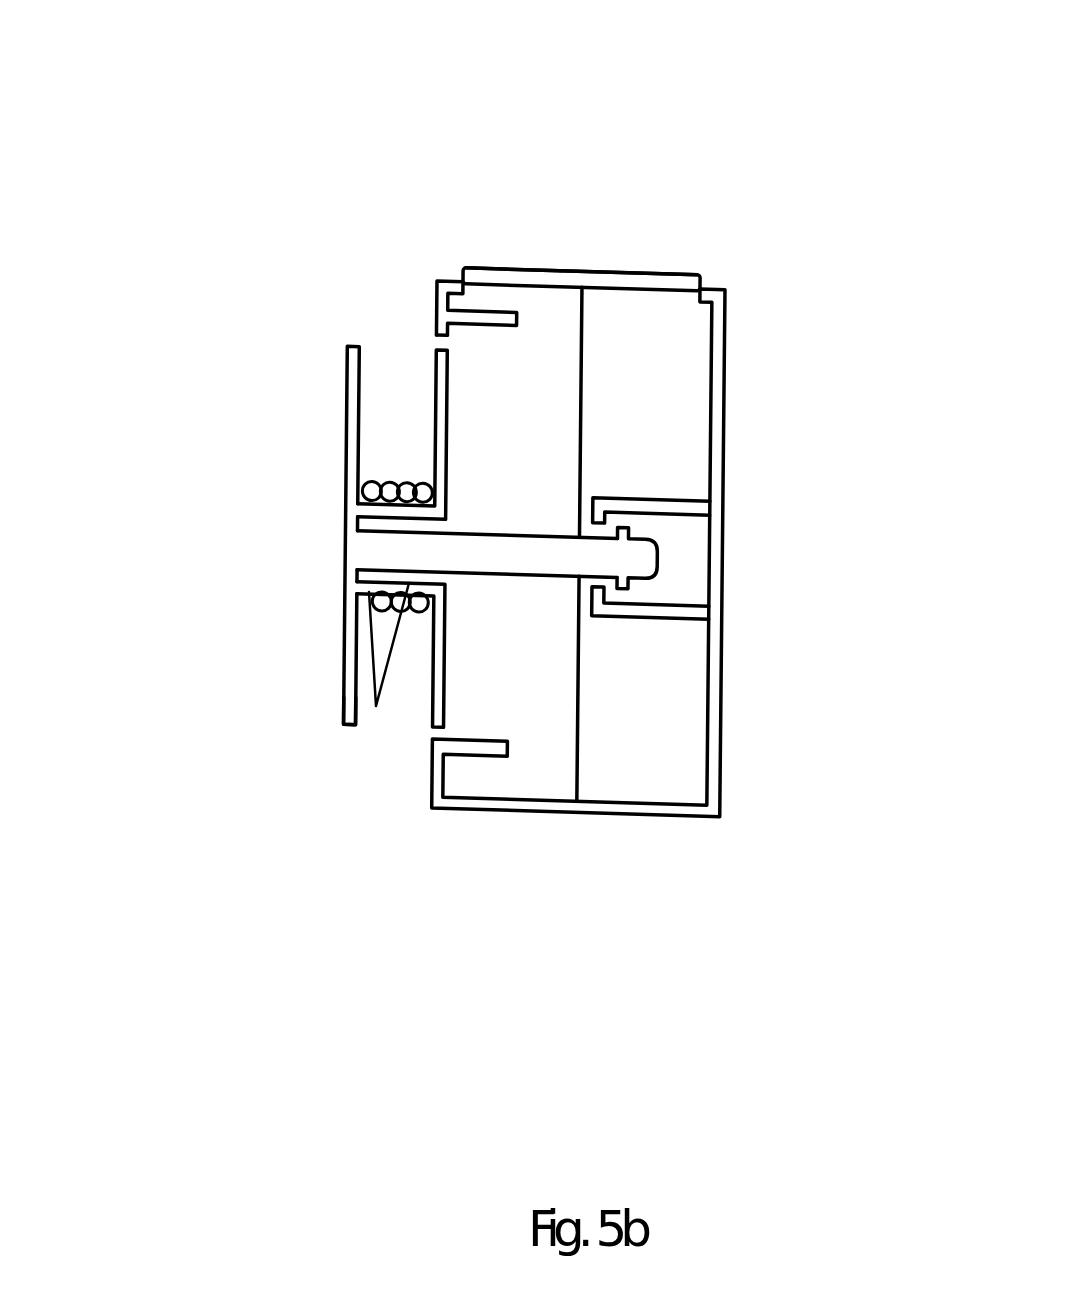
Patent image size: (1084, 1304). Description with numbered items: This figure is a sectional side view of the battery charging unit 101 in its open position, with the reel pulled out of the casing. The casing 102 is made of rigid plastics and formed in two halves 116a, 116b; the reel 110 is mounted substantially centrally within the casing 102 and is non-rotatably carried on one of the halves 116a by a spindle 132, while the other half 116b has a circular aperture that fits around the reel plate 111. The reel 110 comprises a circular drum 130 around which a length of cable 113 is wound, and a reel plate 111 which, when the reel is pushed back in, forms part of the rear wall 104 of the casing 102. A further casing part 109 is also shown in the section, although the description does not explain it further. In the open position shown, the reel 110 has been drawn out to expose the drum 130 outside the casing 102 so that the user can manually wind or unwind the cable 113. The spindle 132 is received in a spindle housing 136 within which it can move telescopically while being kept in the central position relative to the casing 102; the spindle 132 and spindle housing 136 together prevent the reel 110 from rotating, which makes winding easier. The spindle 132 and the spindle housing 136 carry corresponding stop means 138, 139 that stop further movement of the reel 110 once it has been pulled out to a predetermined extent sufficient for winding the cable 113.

The charging unit 101 is at (806, 214).
The casing 102 is at (725, 660).
The rear wall 104 is at (432, 325).
The cover plate 109 is at (629, 268).
The reel 110 is at (350, 597).
The reel plate 111 is at (350, 714).
The cable 113 is at (390, 487).
The casing half 116a is at (598, 268).
The casing half 116b is at (504, 268).
The drum 130 is at (377, 705).
The spindle 132 is at (553, 555).
The spindle housing 136 is at (685, 498).
The stop means 138 is at (625, 590).
The stop means 139 is at (600, 595).